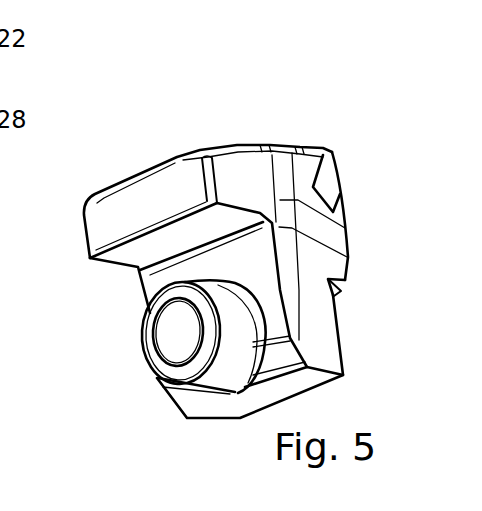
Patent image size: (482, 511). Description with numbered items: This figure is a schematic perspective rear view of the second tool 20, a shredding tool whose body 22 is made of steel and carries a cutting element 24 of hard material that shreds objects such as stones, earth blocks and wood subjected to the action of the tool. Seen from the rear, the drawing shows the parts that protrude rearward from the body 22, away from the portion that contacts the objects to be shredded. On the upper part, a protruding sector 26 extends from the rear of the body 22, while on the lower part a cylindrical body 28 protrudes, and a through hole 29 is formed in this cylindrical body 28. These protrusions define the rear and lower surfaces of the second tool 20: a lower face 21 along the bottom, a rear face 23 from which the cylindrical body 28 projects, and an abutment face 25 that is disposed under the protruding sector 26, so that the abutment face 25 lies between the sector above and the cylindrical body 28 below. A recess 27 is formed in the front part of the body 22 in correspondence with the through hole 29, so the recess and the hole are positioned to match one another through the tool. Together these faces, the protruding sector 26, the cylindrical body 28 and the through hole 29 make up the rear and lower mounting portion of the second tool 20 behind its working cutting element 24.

The second tool 20 is at (224, 132).
The lower face 21 is at (250, 403).
The body 22 is at (313, 257).
The rear face 23 is at (232, 267).
The cutting element 24 is at (330, 183).
The abutment face 25 is at (88, 256).
The protruding sector 26 is at (134, 212).
The recess 27 is at (338, 295).
The cylindrical body 28 is at (227, 368).
The through hole 29 is at (187, 337).